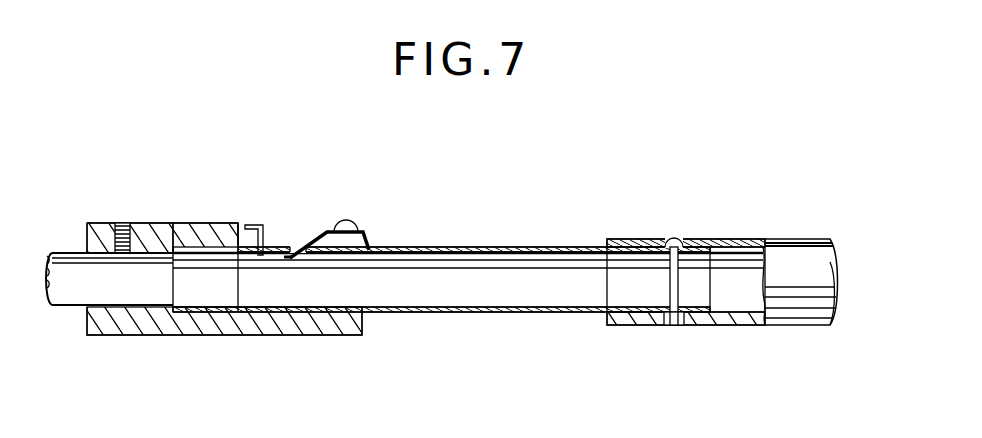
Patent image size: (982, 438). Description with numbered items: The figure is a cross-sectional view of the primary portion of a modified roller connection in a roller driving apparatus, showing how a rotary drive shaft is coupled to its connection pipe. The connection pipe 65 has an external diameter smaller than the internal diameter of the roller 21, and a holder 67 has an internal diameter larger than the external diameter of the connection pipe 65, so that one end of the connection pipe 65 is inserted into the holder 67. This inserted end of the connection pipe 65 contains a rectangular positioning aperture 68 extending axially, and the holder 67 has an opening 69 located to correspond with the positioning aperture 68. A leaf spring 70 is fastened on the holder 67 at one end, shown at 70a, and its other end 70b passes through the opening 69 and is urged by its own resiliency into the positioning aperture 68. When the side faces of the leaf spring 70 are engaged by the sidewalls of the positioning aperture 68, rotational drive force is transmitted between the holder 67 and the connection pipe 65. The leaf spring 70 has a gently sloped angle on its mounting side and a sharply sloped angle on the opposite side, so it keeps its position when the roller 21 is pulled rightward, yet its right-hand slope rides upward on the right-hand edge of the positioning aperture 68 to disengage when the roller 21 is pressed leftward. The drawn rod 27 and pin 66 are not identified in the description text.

The roller 21 is at (800, 248).
The inner rod 27 is at (75, 252).
The connection pipe 65 is at (483, 247).
The pin 66 is at (670, 283).
The holder 67 is at (148, 230).
The positioning aperture 68 is at (273, 226).
The opening 69 is at (298, 243).
The leaf spring 70 is at (342, 277).
The fastened end of leaf spring 70a is at (355, 223).
The other end of leaf spring 70b is at (290, 258).